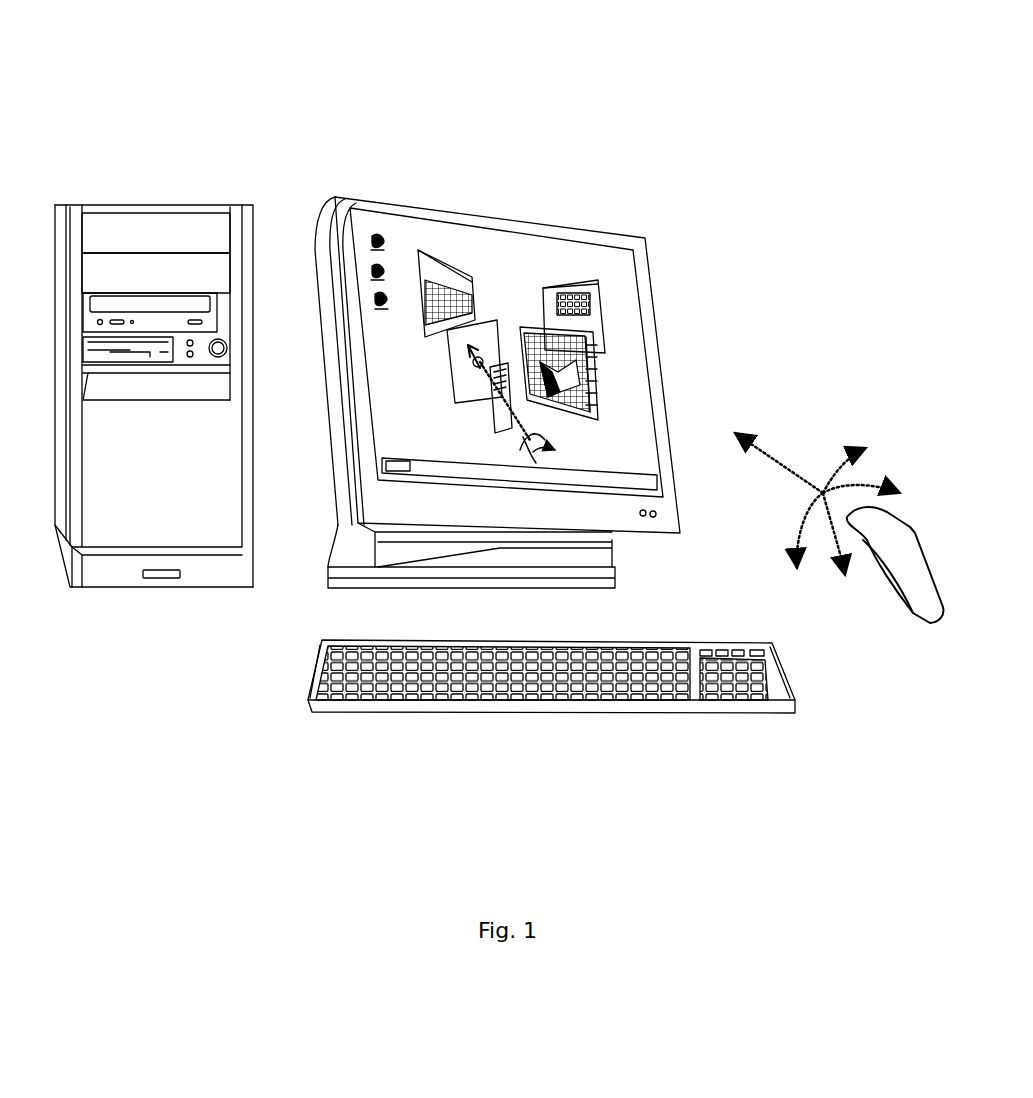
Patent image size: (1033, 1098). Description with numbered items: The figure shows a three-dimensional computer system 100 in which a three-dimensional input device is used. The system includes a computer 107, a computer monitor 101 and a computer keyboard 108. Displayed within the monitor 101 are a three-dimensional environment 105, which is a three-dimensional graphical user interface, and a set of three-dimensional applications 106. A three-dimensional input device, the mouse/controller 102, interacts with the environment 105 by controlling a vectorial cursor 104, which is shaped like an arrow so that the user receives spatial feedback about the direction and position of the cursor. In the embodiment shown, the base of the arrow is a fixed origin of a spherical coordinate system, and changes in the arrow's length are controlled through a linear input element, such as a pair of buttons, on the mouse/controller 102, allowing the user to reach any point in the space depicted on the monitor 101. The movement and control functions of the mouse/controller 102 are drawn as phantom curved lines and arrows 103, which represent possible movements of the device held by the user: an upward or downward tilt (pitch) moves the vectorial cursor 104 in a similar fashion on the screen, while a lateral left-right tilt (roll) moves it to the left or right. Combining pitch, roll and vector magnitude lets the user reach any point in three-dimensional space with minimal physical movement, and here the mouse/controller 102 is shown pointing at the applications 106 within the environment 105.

The 3D computer system 100 is at (675, 115).
The computer monitor 101 is at (328, 195).
The 3D mouse/controller 102 is at (905, 605).
The movement and control functions 103 is at (823, 493).
The vectorial cursor 104 is at (530, 440).
The 3D environment 105 is at (513, 285).
The 3D applications 106 is at (593, 393).
The computer 107 is at (115, 205).
The computer keyboard 108 is at (310, 680).